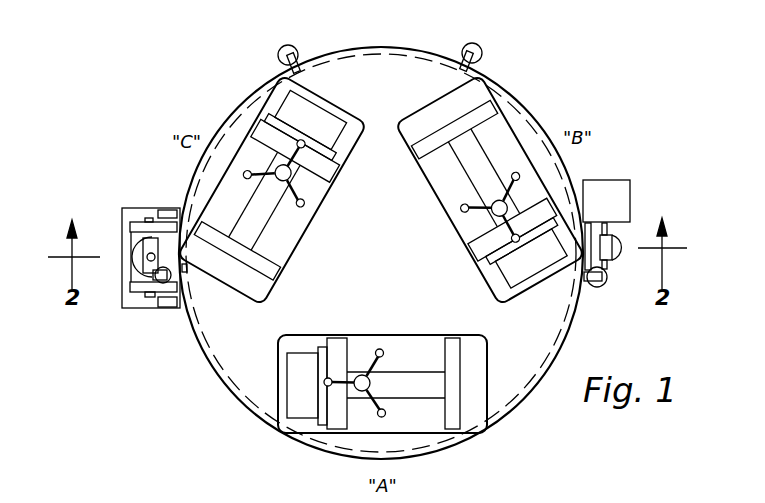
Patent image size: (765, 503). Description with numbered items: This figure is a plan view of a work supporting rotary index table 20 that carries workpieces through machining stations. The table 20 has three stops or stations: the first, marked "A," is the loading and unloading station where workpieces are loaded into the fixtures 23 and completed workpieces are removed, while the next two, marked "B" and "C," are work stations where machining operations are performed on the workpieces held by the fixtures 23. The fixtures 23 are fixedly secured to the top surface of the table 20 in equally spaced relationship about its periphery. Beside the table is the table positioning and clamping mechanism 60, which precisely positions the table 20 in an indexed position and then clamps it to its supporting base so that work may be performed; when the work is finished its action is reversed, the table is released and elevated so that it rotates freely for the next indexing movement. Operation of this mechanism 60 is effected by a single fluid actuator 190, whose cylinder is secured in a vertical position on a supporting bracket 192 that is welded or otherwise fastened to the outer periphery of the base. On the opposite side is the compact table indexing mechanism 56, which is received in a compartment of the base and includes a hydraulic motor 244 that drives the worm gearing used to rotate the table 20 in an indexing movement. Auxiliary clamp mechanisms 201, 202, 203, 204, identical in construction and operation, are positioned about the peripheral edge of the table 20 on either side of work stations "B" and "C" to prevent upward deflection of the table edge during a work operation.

The work supporting table 20 is at (397, 72).
The fixtures 23 is at (473, 92).
The table indexing mechanism 56 is at (636, 237).
The table positioning and clamping mechanism 60 is at (111, 250).
The fluid actuator 190 is at (122, 200).
The supporting bracket 192 is at (136, 312).
The auxiliary clamp mechanism 201 is at (599, 293).
The auxiliary clamp mechanism 202 is at (494, 48).
The auxiliary clamp mechanism 203 is at (290, 42).
The auxiliary clamp mechanism 204 is at (192, 272).
The hydraulic motor 244 is at (596, 190).